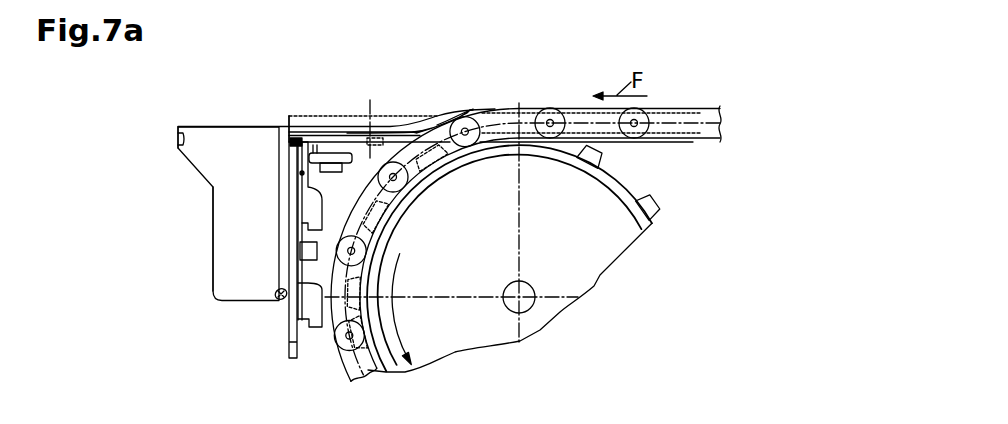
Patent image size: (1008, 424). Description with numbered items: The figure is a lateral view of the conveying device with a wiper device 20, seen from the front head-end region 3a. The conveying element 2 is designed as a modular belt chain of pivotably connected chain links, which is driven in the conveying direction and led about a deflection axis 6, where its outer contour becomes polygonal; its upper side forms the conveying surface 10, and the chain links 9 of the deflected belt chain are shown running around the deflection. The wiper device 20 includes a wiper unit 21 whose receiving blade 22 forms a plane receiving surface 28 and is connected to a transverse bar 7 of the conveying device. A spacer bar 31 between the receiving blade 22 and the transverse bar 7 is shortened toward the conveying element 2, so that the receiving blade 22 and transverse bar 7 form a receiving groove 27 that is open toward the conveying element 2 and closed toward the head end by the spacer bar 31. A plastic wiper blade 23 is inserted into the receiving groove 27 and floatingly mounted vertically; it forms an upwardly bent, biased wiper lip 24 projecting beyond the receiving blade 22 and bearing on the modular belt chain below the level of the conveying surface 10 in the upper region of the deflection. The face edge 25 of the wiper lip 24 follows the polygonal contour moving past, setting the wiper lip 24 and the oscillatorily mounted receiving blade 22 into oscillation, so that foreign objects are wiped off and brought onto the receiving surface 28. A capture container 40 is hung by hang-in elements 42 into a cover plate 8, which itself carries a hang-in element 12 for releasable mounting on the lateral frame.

The conveying element 2 is at (707, 100).
The front head-end region 3a is at (197, 184).
The deflection axis 6 is at (523, 302).
The transverse bar 7 is at (286, 138).
The cover plate 8 is at (293, 308).
The roller chain 9 is at (575, 112).
The conveying surface 10 is at (658, 108).
The hang-in element 12 is at (312, 310).
The wiper device 20 is at (276, 112).
The wiper unit 21 is at (426, 113).
The receiving blade 22 is at (333, 127).
The wiper blade 23 is at (397, 133).
The wiper lip 24 is at (443, 115).
The face edge 25 is at (462, 110).
The receiving groove 27 is at (355, 132).
The receiving surface 28 is at (380, 112).
The spacer bar 31 is at (325, 135).
The capture container 40 is at (205, 239).
The hang-in element 42 is at (300, 172).